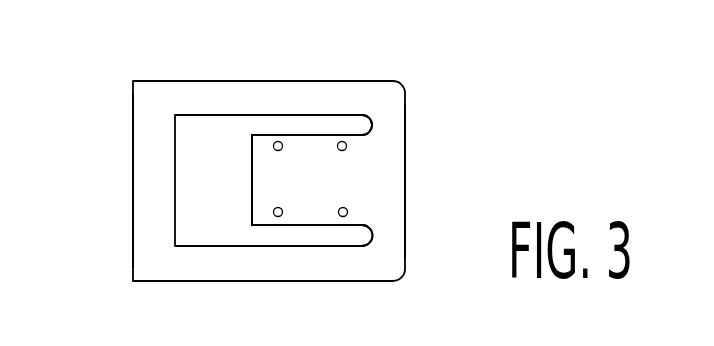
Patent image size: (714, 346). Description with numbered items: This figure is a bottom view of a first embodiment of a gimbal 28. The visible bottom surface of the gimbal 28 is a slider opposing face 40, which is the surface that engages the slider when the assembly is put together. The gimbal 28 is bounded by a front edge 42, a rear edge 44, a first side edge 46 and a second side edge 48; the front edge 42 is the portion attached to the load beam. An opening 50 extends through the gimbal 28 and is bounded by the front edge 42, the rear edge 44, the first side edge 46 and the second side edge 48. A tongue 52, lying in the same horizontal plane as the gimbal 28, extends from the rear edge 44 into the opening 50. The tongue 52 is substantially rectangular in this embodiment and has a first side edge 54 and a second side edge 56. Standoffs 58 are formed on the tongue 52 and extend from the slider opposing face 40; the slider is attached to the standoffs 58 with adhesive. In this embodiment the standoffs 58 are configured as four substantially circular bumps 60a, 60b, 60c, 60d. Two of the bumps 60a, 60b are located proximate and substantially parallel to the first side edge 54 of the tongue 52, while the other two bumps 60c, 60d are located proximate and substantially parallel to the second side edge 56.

The gimbal 28 is at (113, 66).
The slider opposing face 40 is at (362, 170).
The front edge 42 is at (133, 151).
The rear edge 44 is at (406, 124).
The first side edge 46 is at (223, 81).
The second side edge 48 is at (288, 282).
The opening 50 is at (192, 125).
The tongue 52 is at (333, 183).
The first side edge 54 is at (312, 135).
The second side edge 56 is at (337, 228).
The standoffs 58 is at (273, 226).
The bump 60a is at (343, 141).
The bump 60b is at (273, 146).
The bump 60c is at (348, 215).
The bump 60d is at (273, 212).